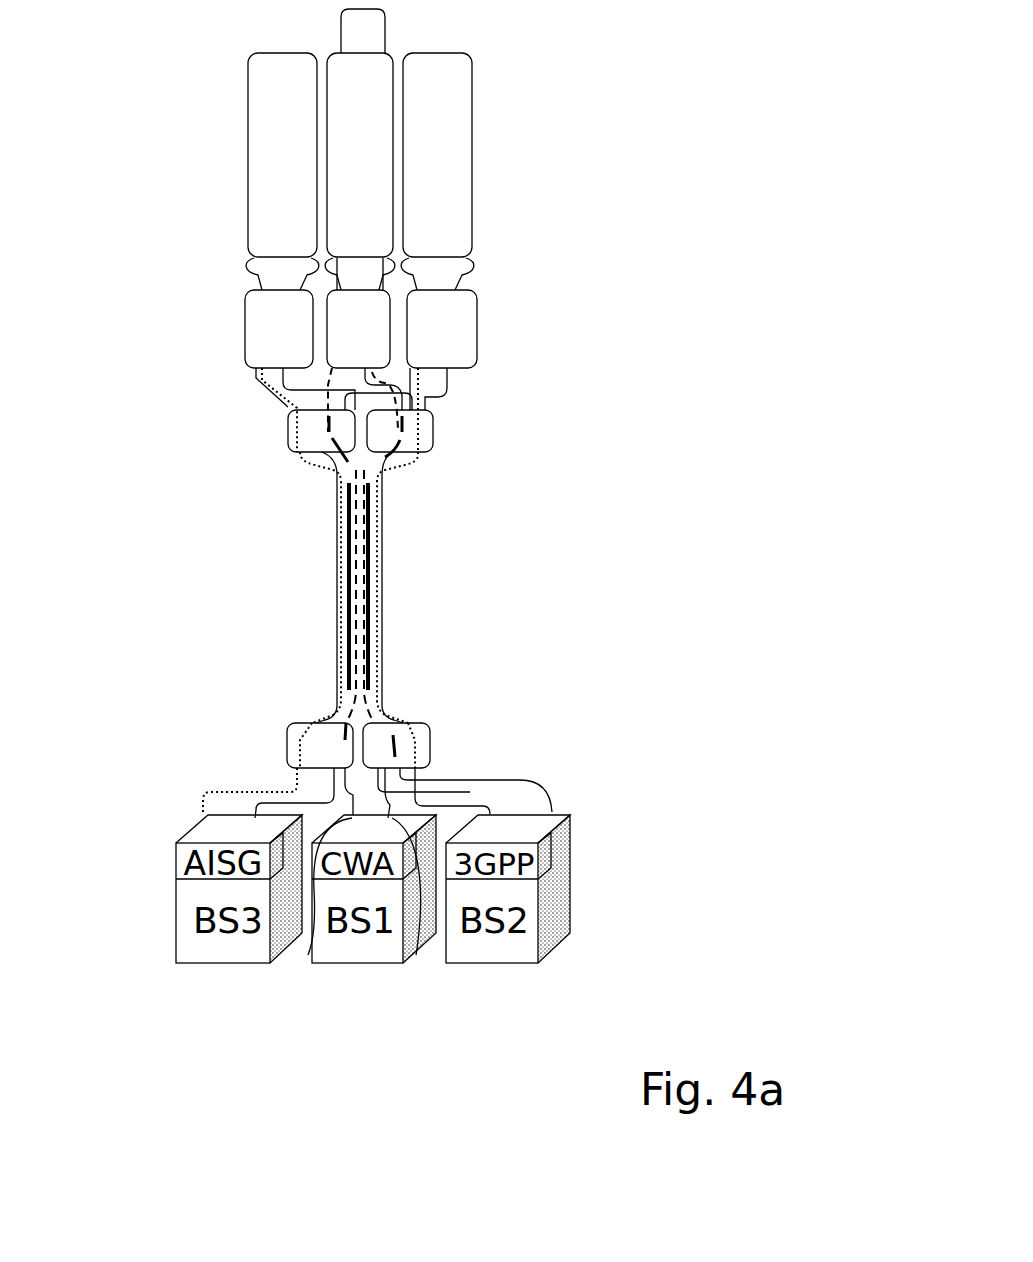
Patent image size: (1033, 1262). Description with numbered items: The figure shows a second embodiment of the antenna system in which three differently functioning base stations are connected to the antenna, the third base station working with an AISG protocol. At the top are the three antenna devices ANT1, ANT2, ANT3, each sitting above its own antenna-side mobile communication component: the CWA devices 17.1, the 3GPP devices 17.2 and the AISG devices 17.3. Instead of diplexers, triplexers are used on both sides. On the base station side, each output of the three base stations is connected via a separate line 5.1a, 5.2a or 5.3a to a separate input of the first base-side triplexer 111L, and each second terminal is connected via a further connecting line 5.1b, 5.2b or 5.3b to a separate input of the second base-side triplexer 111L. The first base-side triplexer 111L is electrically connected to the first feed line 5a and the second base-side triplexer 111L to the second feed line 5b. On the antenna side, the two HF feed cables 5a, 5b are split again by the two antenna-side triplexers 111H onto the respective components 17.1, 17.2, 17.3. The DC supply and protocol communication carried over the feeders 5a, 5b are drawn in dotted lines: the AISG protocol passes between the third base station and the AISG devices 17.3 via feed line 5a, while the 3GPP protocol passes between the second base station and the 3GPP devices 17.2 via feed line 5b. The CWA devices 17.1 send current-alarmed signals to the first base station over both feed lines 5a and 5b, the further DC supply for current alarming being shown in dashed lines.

The first antenna device ANT1 is at (370, 103).
The second antenna device ANT2 is at (452, 137).
The third antenna device ANT3 is at (267, 92).
The CWA devices 17.1 is at (457, 308).
The antenna-side 3GPP devices 17.2 is at (465, 352).
The antenna-side AISG devices 17.3 is at (255, 313).
The antenna-side triplexer 111H is at (290, 448).
The base-side triplexer 111L is at (290, 727).
The first feed line 5a is at (347, 578).
The second feed line 5b is at (370, 597).
The first connecting line of base station BS1 5.1a is at (308, 955).
The further connecting line of base station BS1 5.1b is at (416, 955).
The first connecting line of base station BS2 5.2a is at (468, 803).
The further connecting line of base station BS2 5.2b is at (545, 790).
The first connecting line of base station BS3 5.3a is at (226, 790).
The further connecting line of base station BS3 5.3b is at (260, 810).